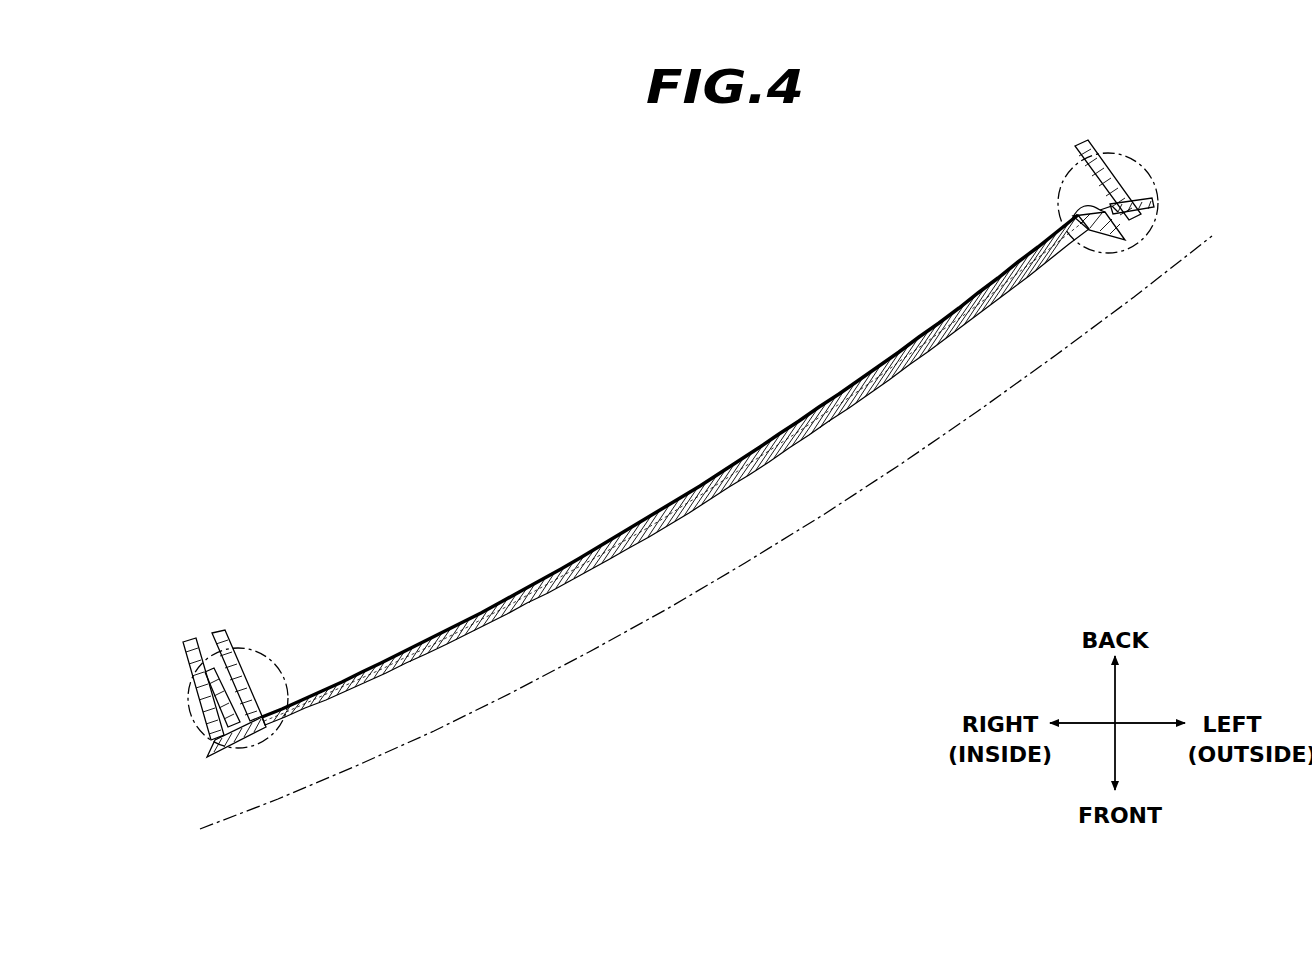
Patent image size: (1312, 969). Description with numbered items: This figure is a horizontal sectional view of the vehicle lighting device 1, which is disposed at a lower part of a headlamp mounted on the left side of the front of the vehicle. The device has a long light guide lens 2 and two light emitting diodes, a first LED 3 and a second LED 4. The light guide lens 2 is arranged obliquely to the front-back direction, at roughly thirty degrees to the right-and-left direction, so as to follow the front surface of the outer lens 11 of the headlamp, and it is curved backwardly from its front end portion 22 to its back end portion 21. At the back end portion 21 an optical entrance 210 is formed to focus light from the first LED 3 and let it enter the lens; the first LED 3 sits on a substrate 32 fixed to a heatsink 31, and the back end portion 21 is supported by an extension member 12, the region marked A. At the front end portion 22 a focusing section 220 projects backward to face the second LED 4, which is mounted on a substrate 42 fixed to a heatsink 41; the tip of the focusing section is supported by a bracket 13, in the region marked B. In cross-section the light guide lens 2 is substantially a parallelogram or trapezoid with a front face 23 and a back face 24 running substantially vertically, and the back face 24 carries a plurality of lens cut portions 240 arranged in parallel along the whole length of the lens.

The vehicle lighting device 1 is at (621, 282).
The light guide lens 2 is at (668, 567).
The first LED 3 is at (1139, 152).
The second LED 4 is at (174, 706).
The outer lens 11 is at (1188, 255).
The extension member 12 is at (1110, 230).
The bracket 13 is at (211, 636).
The back end portion 21 is at (1100, 262).
The front end portion 22 is at (266, 741).
The front face 23 is at (857, 418).
The back face 24 is at (760, 450).
The heatsink 31 is at (1086, 146).
The substrate 32 is at (1118, 206).
The heatsink 41 is at (185, 658).
The substrate 42 is at (207, 693).
The optical entrance 210 is at (1092, 196).
The focusing section 220 is at (264, 692).
The lens cut portions 240 is at (600, 543).
The detail region A is at (1060, 193).
The detail region B is at (242, 645).